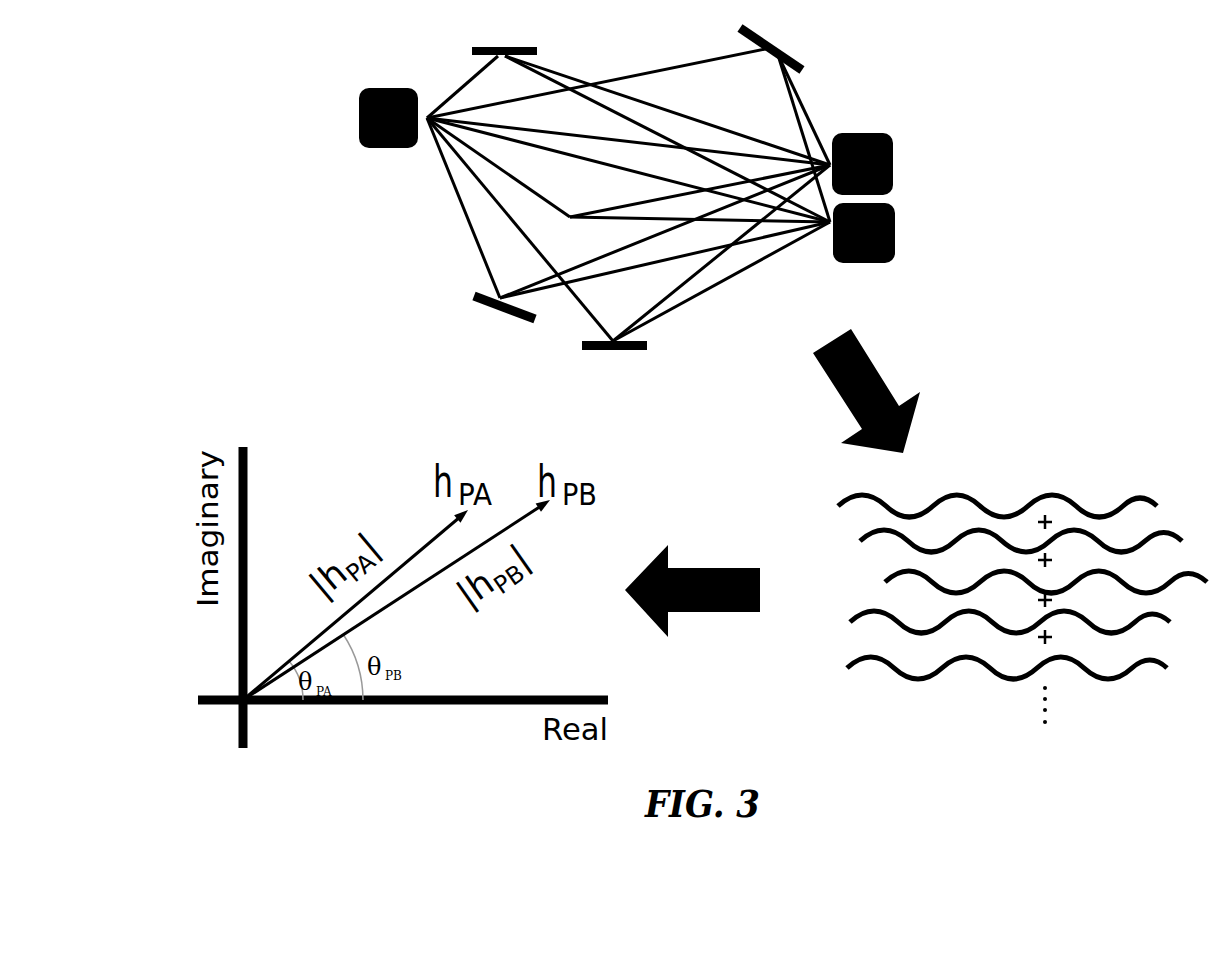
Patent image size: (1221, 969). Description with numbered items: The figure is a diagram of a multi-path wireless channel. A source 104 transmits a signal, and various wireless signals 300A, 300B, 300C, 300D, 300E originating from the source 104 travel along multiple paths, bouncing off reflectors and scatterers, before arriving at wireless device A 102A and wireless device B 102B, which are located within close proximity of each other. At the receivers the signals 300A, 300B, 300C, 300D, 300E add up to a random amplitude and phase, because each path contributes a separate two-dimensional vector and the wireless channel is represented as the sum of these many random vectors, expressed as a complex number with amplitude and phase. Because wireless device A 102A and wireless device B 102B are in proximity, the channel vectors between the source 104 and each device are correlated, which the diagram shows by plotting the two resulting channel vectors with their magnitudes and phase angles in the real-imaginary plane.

The source 104 is at (358, 118).
The wireless device A 102A is at (893, 163).
The wireless device B 102B is at (895, 234).
The wireless signal 300A is at (462, 82).
The wireless signal 300B is at (628, 78).
The wireless signal 300C is at (523, 180).
The wireless signal 300D is at (573, 297).
The wireless signal 300E is at (462, 202).